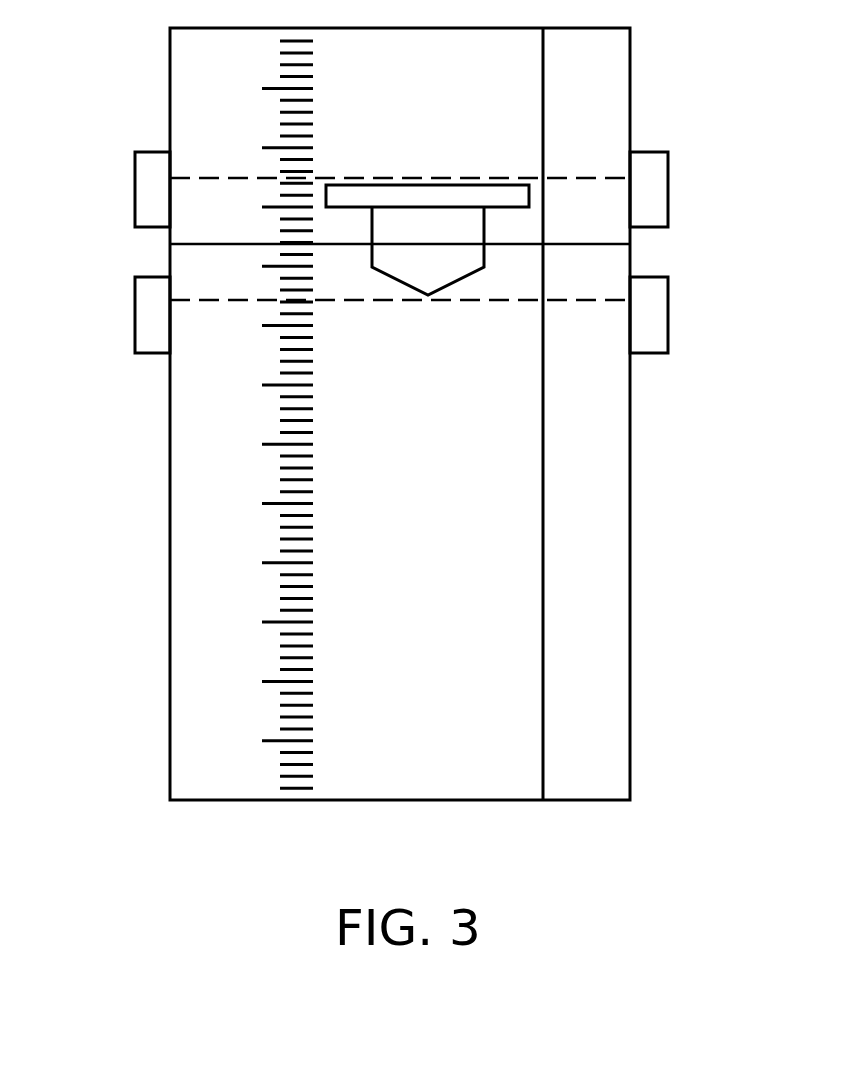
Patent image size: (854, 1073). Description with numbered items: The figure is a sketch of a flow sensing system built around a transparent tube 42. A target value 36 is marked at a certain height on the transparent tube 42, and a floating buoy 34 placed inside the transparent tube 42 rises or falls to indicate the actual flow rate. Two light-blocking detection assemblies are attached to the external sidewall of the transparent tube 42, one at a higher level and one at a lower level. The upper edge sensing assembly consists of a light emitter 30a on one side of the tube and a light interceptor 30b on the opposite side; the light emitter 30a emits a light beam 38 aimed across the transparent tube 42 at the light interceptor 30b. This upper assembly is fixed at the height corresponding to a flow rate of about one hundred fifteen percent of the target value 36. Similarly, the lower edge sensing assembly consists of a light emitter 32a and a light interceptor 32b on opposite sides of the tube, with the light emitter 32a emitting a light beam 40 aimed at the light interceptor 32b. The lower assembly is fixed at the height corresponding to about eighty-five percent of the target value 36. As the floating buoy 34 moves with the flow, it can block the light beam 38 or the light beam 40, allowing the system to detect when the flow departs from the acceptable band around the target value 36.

The light emitter 30a is at (153, 230).
The light interceptor 30b is at (637, 232).
The light emitter 32a is at (153, 355).
The light interceptor 32b is at (650, 355).
The floating buoy 34 is at (442, 292).
The target value 36 is at (217, 243).
The light beam 38 is at (587, 177).
The light beam 40 is at (578, 302).
The transparent tube 42 is at (630, 673).